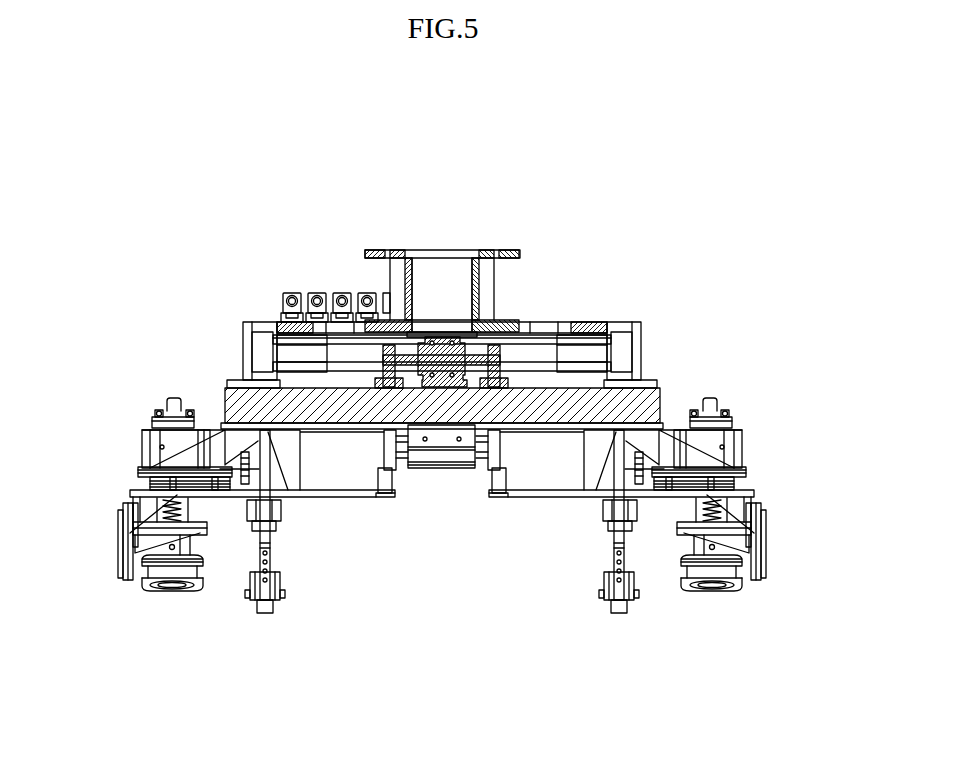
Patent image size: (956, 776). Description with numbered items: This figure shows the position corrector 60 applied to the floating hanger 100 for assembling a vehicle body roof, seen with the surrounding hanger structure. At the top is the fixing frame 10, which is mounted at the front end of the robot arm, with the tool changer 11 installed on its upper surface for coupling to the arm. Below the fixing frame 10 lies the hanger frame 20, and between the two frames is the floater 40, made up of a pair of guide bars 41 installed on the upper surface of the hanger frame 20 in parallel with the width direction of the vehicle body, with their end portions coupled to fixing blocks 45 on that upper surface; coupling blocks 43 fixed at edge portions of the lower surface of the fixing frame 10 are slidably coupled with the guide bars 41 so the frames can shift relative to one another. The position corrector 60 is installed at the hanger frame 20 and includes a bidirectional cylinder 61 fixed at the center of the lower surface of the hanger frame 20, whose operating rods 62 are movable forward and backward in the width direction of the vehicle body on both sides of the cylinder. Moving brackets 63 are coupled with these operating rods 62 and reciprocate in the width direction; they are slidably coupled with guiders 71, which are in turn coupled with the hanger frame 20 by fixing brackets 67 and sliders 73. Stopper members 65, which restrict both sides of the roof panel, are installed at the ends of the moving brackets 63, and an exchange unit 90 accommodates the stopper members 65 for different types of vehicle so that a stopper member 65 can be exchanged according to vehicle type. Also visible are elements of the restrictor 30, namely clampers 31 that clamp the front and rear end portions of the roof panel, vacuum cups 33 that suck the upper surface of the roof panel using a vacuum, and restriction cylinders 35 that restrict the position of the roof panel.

The floating hanger 100 is at (425, 172).
The fixing frame 10 is at (585, 321).
The tool changer 11 is at (483, 250).
The hanger frame 20 is at (653, 392).
The restrictor 30 is at (227, 604).
The clamper 31 is at (267, 613).
The vacuum cup 33 is at (172, 592).
The restriction cylinder 35 is at (143, 450).
The floater 40 is at (560, 390).
The guide bar 41 is at (531, 350).
The coupling block 43 is at (302, 371).
The fixing block 45 is at (266, 336).
The position corrector 60 is at (447, 482).
The bidirectional cylinder 61 is at (430, 470).
The operating rod 62 is at (396, 456).
The moving bracket 63 is at (323, 498).
The stopper member 65 is at (128, 540).
The fixing bracket 67 is at (158, 413).
The guider 71 is at (138, 477).
The slider 73 is at (218, 491).
The exchange unit 90 is at (336, 280).